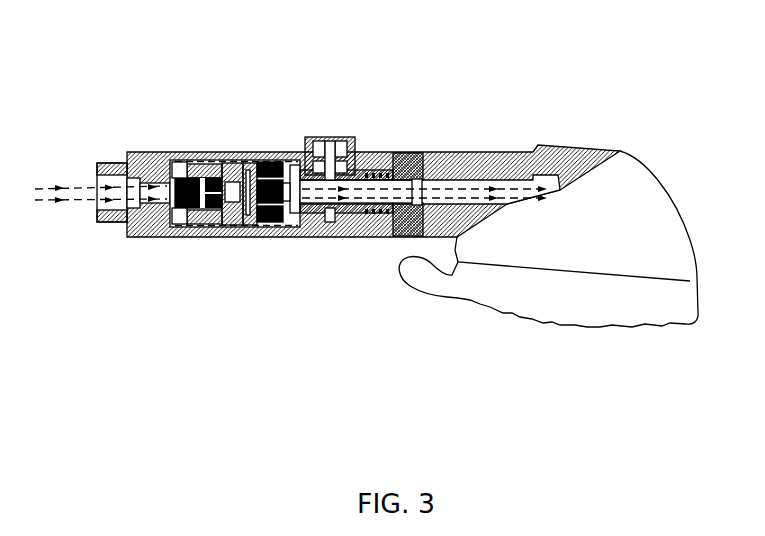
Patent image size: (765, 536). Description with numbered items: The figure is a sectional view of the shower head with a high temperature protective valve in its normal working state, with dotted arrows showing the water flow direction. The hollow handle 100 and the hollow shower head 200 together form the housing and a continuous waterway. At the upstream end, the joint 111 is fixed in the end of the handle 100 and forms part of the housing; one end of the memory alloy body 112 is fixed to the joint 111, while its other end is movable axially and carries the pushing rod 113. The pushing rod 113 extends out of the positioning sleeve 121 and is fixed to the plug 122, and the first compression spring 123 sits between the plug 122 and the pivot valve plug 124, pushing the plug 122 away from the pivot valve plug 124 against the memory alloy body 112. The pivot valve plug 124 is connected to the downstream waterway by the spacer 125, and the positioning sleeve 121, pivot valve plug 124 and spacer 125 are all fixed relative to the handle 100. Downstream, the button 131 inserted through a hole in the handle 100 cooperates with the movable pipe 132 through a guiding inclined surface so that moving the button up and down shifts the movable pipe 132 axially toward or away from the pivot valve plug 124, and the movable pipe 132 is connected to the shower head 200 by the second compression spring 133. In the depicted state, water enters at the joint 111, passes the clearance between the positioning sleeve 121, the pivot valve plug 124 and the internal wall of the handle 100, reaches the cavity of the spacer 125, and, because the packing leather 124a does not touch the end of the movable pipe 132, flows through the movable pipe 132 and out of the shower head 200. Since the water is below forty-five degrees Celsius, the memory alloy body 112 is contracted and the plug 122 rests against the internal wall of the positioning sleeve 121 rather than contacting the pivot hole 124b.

The handle 100 is at (136, 236).
The joint 111 is at (103, 163).
The memory alloy body 112 is at (168, 187).
The pushing rod 113 is at (173, 161).
The positioning sleeve 121 is at (222, 163).
The plug 122 is at (228, 224).
The first compression spring 123 is at (252, 165).
The pivot valve plug 124 is at (257, 225).
The packing leather 124a is at (284, 224).
The pivot hole 124b is at (230, 165).
The spacer 125 is at (297, 166).
The button 131 is at (343, 137).
The movable pipe 132 is at (330, 222).
The second compression spring 133 is at (378, 215).
The shower head 200 is at (544, 310).